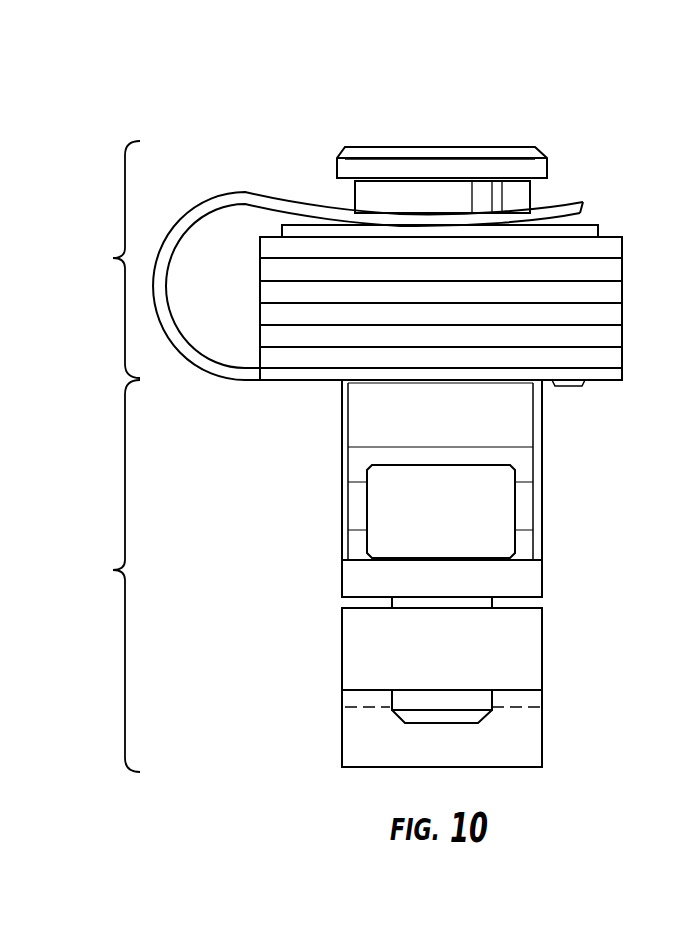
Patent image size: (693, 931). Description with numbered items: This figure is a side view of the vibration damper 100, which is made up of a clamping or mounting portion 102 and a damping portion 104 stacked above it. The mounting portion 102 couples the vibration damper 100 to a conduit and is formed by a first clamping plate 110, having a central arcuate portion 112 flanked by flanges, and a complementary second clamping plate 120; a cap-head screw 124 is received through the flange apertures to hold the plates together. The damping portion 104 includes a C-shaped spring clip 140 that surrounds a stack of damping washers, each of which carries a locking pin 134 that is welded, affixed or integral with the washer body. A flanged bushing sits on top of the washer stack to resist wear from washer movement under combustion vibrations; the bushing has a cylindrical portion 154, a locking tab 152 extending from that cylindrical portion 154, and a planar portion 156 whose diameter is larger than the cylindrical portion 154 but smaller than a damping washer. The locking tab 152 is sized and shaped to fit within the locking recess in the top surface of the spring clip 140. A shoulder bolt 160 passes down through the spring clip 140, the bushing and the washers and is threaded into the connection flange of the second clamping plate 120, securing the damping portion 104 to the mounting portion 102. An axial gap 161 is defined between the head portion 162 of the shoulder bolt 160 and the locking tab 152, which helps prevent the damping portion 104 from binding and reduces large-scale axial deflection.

The vibration damper 100 is at (599, 93).
The mounting portion 102 is at (107, 576).
The damping portion 104 is at (107, 259).
The first clamping plate 110 is at (547, 673).
The central arcuate portion 112 is at (547, 750).
The second clamping plate 120 is at (547, 583).
The cap-head screw 124 is at (385, 461).
The locking pin 134 is at (568, 387).
The spring clip 140 is at (207, 195).
The locking tab 152 is at (497, 200).
The cylindrical portion 154 is at (372, 200).
The planar portion 156 is at (577, 235).
The shoulder bolt 160 is at (410, 144).
The axial gap 161 is at (345, 176).
The head portion 162 is at (474, 165).